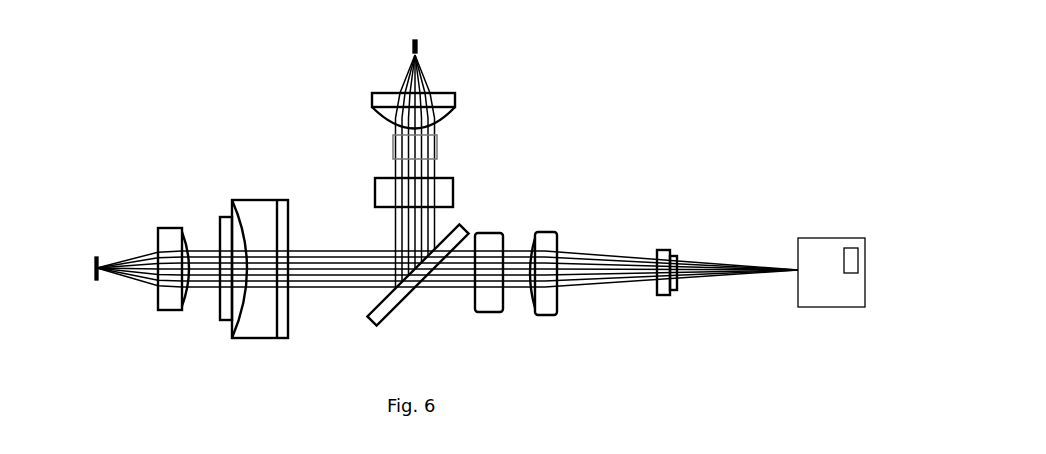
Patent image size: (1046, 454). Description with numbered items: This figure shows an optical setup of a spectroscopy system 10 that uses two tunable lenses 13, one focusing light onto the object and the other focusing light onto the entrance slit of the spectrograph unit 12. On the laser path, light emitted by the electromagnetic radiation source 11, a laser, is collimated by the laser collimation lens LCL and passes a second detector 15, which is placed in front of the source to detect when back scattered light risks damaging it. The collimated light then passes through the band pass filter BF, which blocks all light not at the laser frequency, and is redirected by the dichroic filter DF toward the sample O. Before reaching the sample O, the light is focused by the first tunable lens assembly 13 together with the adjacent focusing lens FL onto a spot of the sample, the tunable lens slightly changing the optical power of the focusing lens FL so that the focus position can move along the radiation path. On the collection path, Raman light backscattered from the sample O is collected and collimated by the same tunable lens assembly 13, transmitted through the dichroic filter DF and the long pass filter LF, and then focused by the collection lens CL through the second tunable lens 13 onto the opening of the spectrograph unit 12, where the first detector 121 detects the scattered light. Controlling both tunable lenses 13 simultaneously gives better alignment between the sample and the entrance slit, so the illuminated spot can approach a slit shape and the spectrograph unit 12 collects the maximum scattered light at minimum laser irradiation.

The system 10 is at (120, 88).
The electromagnetic radiation source 11 is at (418, 42).
The laser collimation lens LCL is at (455, 92).
The second detector 15 is at (437, 145).
The band pass filter BF is at (440, 190).
The dichroic filter DF is at (407, 297).
The long pass filter LF is at (490, 302).
The collection lens CL is at (560, 305).
The tunable lens 13 is at (289, 300).
The focusing lens FL is at (183, 310).
The sample O is at (98, 282).
The spectrograph unit 12 is at (832, 308).
The first detector 121 is at (848, 248).